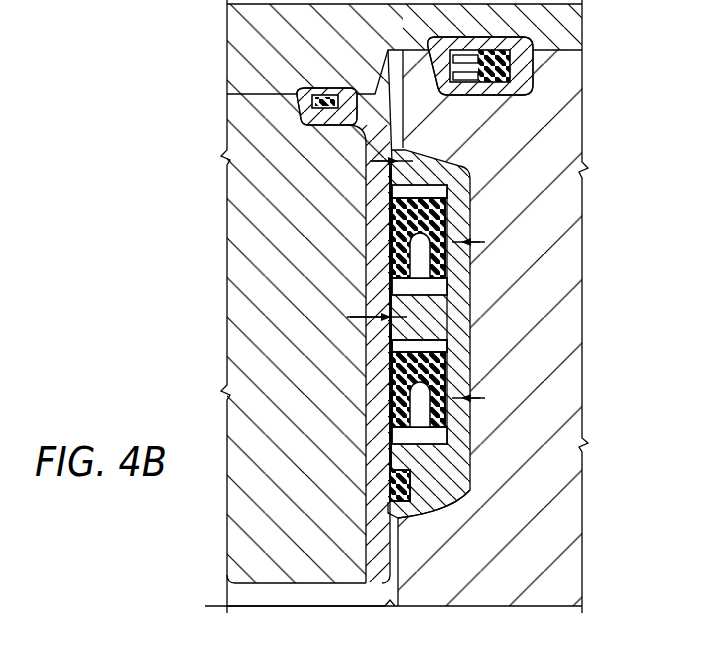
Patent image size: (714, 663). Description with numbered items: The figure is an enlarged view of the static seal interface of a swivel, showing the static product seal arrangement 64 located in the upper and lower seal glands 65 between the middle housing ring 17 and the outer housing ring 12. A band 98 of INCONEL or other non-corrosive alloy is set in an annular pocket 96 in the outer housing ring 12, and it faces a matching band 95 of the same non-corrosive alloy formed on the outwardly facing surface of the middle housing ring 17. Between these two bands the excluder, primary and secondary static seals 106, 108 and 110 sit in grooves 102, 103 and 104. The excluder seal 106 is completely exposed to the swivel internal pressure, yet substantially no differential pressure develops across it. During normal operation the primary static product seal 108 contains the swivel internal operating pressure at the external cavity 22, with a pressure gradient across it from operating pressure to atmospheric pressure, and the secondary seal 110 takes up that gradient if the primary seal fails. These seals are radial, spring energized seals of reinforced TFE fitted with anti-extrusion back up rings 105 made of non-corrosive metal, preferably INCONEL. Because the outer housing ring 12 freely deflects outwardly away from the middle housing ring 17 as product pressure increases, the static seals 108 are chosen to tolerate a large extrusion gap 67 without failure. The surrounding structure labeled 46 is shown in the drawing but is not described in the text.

The outer housing ring 12 is at (585, 206).
The middle housing ring 17 is at (253, 295).
The external cavity 22 is at (235, 595).
The cap member 46 is at (240, 52).
The static product seal arrangement 64 is at (484, 458).
The seal glands 65 is at (392, 243).
The extrusion gap 67 is at (366, 160).
The band of non-corrosive alloy 95 is at (366, 300).
The annular pocket 96 is at (467, 262).
The band of non-corrosive alloy 98 is at (440, 318).
The groove 102 is at (446, 373).
The groove 103 is at (467, 493).
The groove 104 is at (470, 198).
The anti-extrusion back up ring 105 is at (462, 160).
The excluder static seal 106 is at (390, 480).
The primary static seal 108 is at (392, 350).
The secondary static seal 110 is at (370, 162).